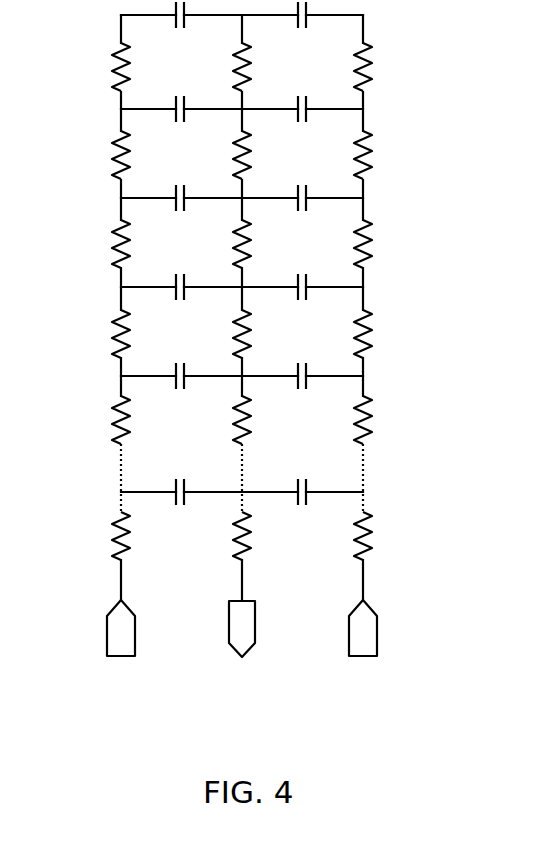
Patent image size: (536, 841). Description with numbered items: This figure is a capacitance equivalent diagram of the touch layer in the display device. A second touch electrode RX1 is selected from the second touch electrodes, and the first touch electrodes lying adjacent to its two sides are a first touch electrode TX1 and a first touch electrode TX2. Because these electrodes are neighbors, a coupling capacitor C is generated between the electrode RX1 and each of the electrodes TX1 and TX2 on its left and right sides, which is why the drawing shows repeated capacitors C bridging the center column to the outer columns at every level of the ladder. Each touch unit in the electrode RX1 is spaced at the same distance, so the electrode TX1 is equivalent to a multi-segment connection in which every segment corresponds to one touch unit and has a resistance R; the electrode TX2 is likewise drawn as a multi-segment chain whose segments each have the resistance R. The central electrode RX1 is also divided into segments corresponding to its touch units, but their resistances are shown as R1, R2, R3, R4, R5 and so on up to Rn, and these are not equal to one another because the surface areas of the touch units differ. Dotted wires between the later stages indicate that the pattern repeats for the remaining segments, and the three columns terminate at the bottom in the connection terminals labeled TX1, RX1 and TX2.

The resistance of each segment R is at (244, 301).
The coupling capacitor C is at (241, 264).
The resistance of first touch unit in RX1 R1 is at (257, 67).
The resistance of second touch unit in RX1 R2 is at (257, 155).
The resistance of third touch unit in RX1 R3 is at (257, 244).
The resistance of fourth touch unit in RX1 R4 is at (257, 334).
The resistance of fifth touch unit in RX1 R5 is at (257, 420).
The resistance of n-th touch unit in RX1 Rn is at (257, 536).
The first touch electrode TX1 is at (114, 646).
The second touch electrode RX1 is at (241, 647).
The first touch electrode TX2 is at (360, 647).